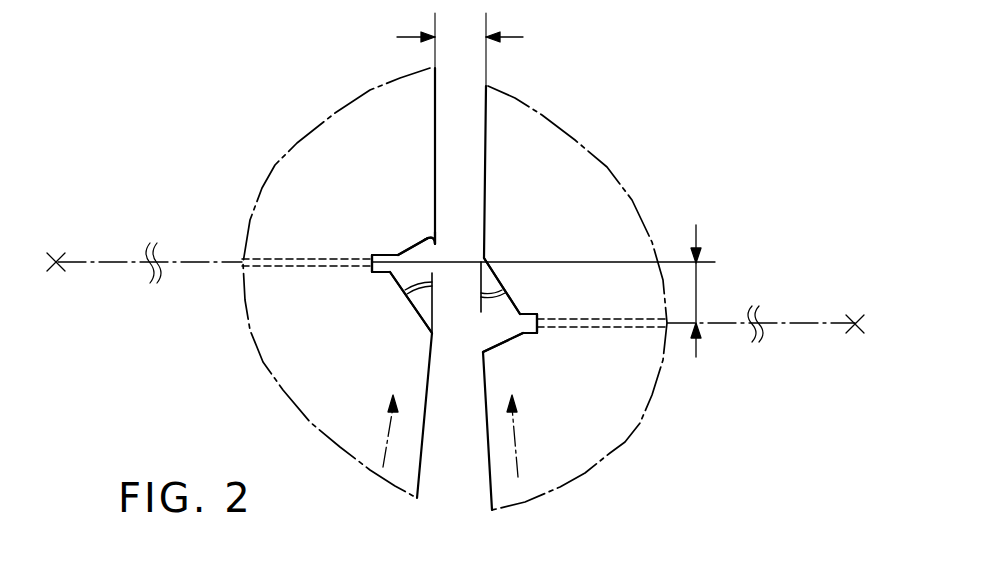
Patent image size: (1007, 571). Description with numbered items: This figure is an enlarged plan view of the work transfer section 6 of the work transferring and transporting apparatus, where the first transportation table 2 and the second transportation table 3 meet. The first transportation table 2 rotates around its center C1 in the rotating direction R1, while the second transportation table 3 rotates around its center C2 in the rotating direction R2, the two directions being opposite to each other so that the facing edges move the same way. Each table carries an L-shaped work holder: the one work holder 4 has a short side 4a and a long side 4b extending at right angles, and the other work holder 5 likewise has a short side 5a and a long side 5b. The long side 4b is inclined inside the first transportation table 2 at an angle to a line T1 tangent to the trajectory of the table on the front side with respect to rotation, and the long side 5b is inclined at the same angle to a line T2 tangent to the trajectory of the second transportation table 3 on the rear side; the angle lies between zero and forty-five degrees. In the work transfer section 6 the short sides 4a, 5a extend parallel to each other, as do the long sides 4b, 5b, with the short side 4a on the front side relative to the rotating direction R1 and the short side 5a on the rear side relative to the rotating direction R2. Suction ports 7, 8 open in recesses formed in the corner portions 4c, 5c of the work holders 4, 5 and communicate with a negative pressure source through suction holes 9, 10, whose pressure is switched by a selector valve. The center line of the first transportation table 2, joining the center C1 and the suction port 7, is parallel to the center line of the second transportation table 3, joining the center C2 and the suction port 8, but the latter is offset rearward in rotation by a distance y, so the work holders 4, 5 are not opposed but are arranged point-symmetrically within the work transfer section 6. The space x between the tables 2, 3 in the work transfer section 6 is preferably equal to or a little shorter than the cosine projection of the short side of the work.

The first transportation table 2 is at (378, 112).
The second transportation table 3 is at (532, 135).
The work holder 4 is at (420, 240).
The short side 4a is at (437, 240).
The long side 4b is at (418, 317).
The corner portion 4c is at (395, 253).
The work holder 5 is at (487, 258).
The short side 5a is at (500, 343).
The long side 5b is at (507, 290).
The corner portion 5c is at (524, 334).
The work transfer section 6 is at (642, 490).
The suction port 7 is at (372, 255).
The suction port 8 is at (530, 313).
The suction hole 9 is at (300, 267).
The suction hole 10 is at (597, 328).
The center of rotation C1 is at (377, 253).
The center of rotation C2 is at (768, 313).
The space x is at (460, 49).
The offset y is at (706, 291).
The tangent line T1 is at (434, 298).
The tangent line T2 is at (473, 285).
The rotating direction R1 is at (392, 427).
The rotating direction R2 is at (515, 446).